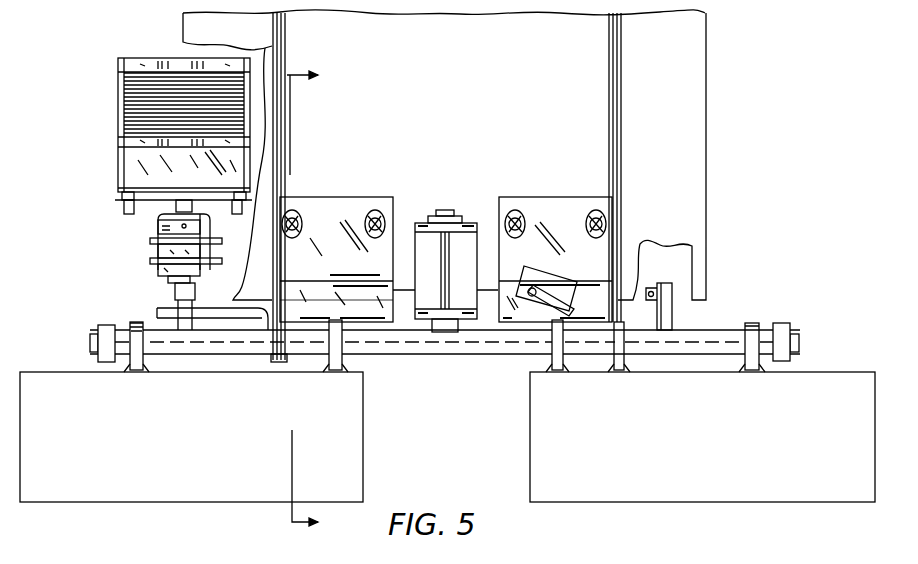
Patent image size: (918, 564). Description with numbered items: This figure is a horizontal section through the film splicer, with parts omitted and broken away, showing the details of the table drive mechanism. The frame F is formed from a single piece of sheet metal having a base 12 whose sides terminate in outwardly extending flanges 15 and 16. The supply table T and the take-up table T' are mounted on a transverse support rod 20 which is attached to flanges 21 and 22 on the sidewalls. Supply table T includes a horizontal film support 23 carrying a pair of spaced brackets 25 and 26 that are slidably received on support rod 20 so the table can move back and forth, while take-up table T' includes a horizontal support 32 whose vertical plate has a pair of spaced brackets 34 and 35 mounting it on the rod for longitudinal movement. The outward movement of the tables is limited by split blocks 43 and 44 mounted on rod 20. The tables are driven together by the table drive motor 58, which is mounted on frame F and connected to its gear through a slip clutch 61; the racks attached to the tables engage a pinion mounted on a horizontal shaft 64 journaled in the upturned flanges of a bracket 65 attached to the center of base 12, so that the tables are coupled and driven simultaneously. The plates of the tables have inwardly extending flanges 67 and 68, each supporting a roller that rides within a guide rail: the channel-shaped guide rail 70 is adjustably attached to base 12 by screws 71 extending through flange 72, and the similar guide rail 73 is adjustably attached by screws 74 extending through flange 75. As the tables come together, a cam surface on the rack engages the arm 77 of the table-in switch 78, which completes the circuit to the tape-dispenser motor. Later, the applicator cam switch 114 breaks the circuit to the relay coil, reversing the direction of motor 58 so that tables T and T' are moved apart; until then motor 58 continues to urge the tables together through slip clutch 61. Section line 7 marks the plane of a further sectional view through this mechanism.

The base 12 is at (463, 76).
The flange 15 is at (192, 26).
The flange 16 is at (708, 149).
The frame F is at (707, 104).
The section line 7- 7 is at (311, 300).
The transverse support rod 20 is at (712, 334).
The flange 21 is at (277, 364).
The flange 22 is at (616, 366).
The horizontal film support 23 is at (128, 491).
The bracket 25 is at (137, 322).
The bracket 26 is at (334, 366).
The horizontal support 32 is at (545, 478).
The bracket 34 is at (556, 366).
The bracket 35 is at (749, 366).
The split block 43 is at (104, 325).
The split block 44 is at (788, 325).
The table drive motor 58 is at (118, 104).
The slip clutch 61 is at (156, 250).
The horizontal shaft 64 is at (440, 246).
The bracket 65 is at (470, 242).
The flange 67 is at (309, 364).
The flange 68 is at (584, 368).
The guide rail 70 is at (300, 292).
The screws 71 is at (294, 212).
The flange 72 is at (340, 199).
The guide rail 73 is at (508, 308).
The screws 74 is at (519, 212).
The flange 75 is at (560, 218).
The arm 77 is at (572, 302).
The table-in switch 78 is at (536, 276).
The applicator cam switch 114 is at (654, 284).
The supply table T is at (388, 456).
The take-up table T' is at (505, 431).